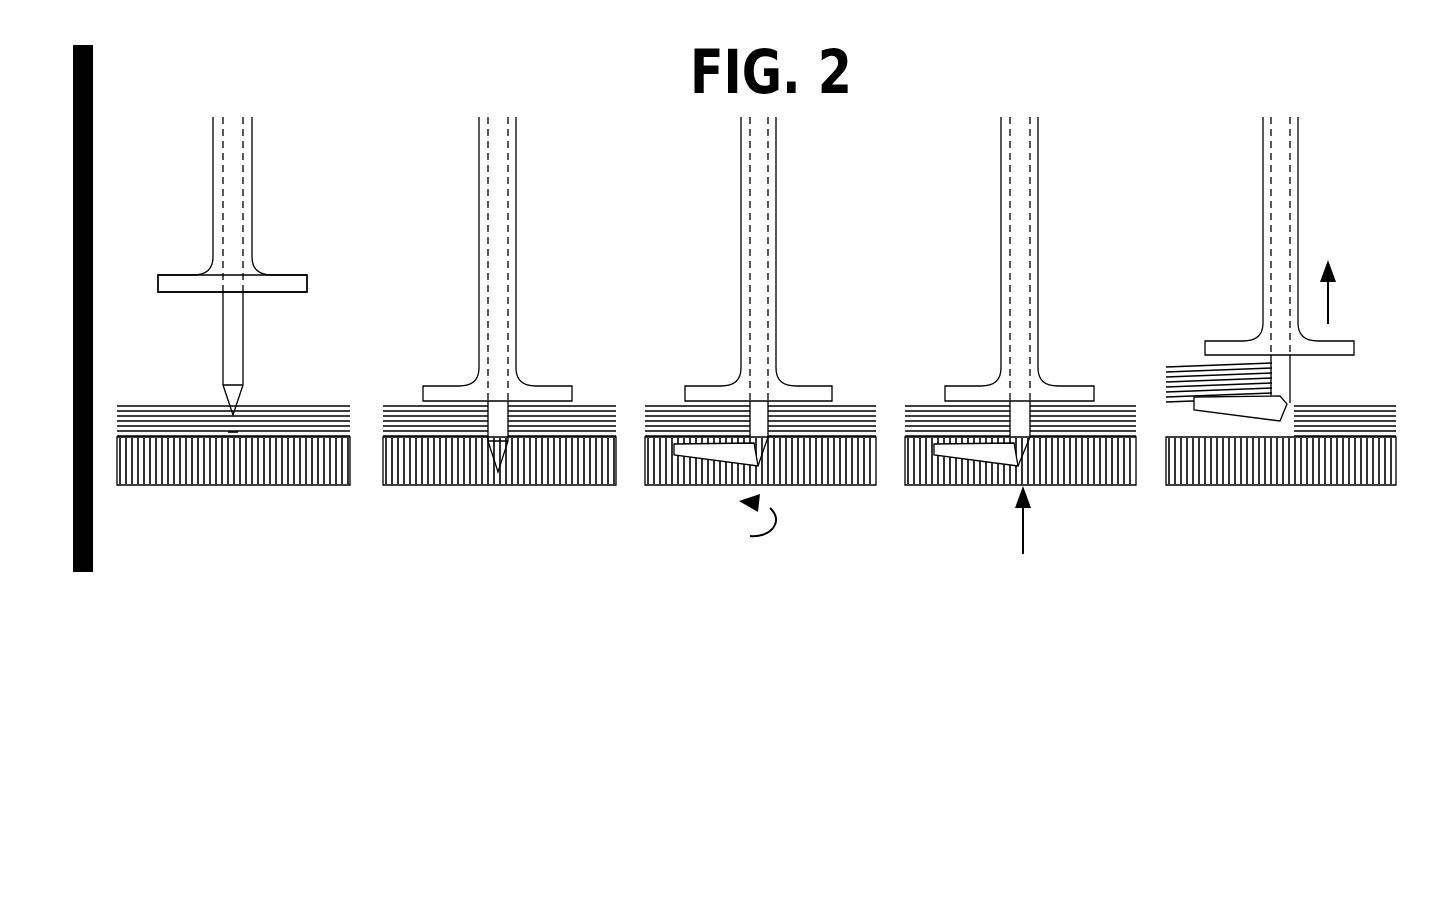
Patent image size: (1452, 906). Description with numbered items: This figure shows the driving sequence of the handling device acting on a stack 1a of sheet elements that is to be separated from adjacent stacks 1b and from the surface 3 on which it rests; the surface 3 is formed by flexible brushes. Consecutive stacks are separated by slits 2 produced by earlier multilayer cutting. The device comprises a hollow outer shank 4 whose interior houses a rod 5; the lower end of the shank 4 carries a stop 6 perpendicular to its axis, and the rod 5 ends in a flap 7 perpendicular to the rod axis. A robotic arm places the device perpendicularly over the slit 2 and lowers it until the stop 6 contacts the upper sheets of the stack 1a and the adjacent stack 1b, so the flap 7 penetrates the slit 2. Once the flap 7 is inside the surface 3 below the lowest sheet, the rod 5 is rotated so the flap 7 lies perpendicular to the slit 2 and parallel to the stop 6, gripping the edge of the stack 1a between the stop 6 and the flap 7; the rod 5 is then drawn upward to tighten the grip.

The stack to be handled 1a is at (163, 418).
The adjacent stack 1b is at (302, 422).
The slit 2 is at (233, 432).
The surface 3 is at (215, 468).
The hollow outer shank 4 is at (247, 197).
The rod 5 is at (230, 347).
The stop 6 is at (170, 278).
The flap 7 is at (716, 454).